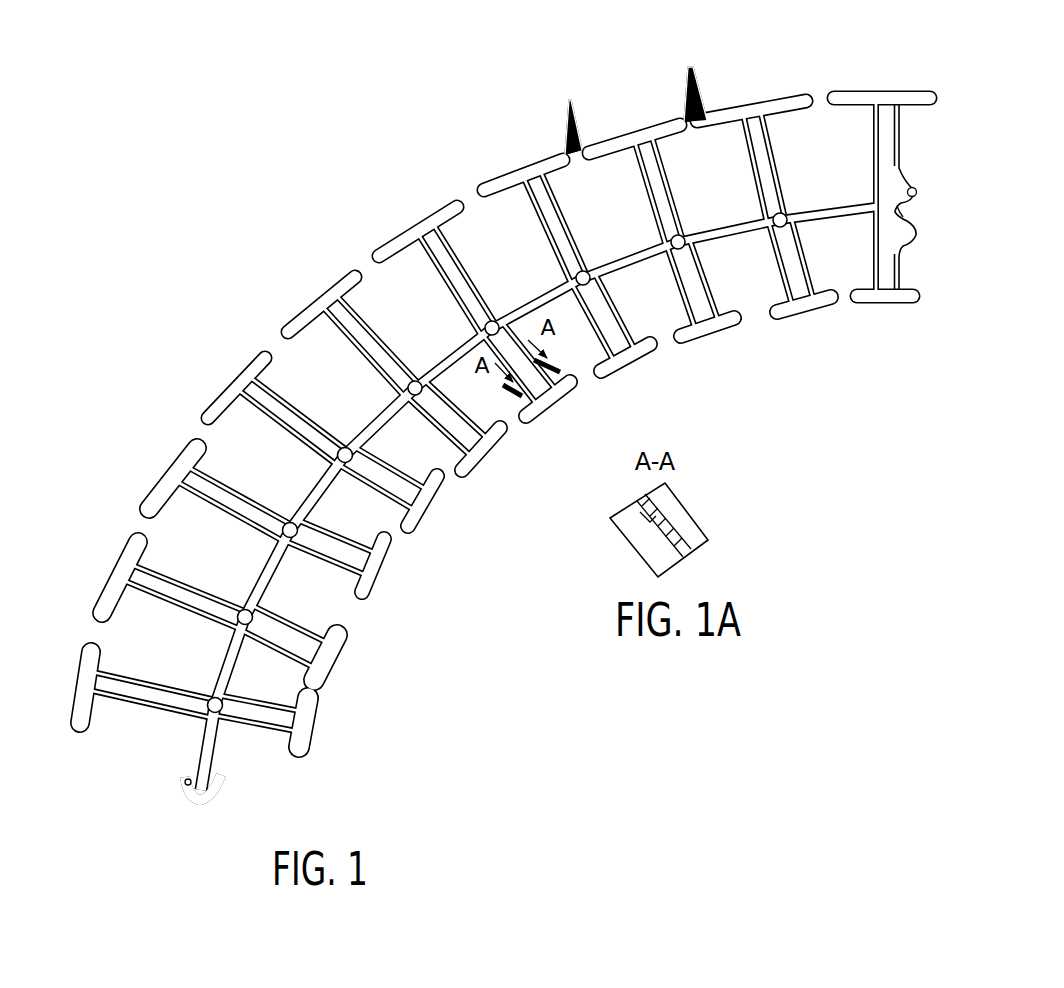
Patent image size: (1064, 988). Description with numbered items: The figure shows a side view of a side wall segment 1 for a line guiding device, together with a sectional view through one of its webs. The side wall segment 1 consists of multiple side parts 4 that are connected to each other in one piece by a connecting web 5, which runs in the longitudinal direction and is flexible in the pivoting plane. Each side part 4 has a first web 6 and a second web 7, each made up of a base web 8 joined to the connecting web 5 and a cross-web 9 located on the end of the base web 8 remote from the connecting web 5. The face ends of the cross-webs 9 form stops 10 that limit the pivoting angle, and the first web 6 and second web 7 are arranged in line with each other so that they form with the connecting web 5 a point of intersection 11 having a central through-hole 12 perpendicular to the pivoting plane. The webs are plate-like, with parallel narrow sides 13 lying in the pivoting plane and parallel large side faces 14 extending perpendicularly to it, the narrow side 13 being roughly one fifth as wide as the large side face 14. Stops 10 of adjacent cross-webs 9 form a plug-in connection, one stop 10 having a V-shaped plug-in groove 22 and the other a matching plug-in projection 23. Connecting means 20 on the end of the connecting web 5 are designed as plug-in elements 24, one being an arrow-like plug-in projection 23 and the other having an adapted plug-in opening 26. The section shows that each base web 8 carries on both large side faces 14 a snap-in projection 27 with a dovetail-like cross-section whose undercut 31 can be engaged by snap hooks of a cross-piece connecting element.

In FIG. 1, the side wall segment 1 is at (947, 203).
In FIG. 1, the side part 4 is at (250, 365).
In FIG. 1, the connecting web 5 is at (843, 213).
In FIG. 1, the first web 6 is at (515, 168).
In FIG. 1, the second web 7 is at (790, 310).
In FIG. 1, the base web 8 is at (330, 475).
In FIG. 1, the cross-web 9 is at (667, 130).
In FIG. 1A, the cross-web 9 is at (633, 530).
In FIG. 1, the stop 10 is at (468, 505).
In FIG. 1, the point of intersection 11 is at (660, 235).
In FIG. 1, the central through-hole 12 is at (775, 225).
In FIG. 1, the narrow side 13 is at (737, 110).
In FIG. 1, the large side face 14 is at (372, 368).
In FIG. 1, the connecting means 20 is at (913, 170).
In FIG. 1, the plug-in groove 22 is at (457, 197).
In FIG. 1, the plug-in projection 23 is at (88, 650).
In FIG. 1, the plug-in element 24 is at (903, 195).
In FIG. 1, the plug-in opening 26 is at (895, 208).
In FIG. 1, the snap-in projection 27 is at (452, 295).
In FIG. 1A, the snap-in projection 27 is at (668, 530).
In FIG. 1A, the undercut 31 is at (673, 538).